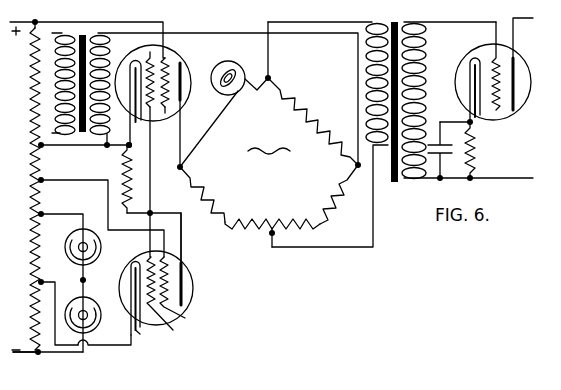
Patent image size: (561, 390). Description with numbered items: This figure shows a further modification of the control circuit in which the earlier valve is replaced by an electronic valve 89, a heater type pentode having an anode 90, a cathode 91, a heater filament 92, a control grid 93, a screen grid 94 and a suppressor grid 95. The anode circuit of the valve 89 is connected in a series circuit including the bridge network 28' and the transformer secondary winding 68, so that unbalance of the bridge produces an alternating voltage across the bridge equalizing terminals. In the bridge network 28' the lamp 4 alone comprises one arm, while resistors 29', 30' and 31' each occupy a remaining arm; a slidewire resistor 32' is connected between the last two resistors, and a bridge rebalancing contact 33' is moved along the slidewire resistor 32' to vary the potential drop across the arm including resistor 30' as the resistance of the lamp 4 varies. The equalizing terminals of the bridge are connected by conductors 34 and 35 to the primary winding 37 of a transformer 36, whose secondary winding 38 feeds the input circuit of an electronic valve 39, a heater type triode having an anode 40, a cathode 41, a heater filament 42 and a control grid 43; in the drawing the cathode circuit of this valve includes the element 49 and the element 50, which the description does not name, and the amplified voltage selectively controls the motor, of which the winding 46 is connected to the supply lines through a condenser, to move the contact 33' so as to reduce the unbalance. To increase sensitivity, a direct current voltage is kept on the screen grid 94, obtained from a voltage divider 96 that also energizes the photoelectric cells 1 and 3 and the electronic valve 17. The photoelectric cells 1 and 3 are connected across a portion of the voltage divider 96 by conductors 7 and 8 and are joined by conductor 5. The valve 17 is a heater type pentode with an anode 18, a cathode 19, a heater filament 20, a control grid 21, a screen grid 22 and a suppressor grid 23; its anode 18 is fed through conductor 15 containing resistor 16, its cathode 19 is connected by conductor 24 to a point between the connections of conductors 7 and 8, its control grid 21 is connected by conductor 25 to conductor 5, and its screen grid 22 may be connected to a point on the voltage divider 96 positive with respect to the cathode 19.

The motor winding 46 is at (22, 186).
The transformer secondary winding 68 is at (151, 53).
The heater filament 92 is at (169, 62).
The anode 90 is at (182, 76).
The electronic valve 89 is at (182, 100).
The suppressor grid 95 is at (182, 113).
The screen grid 94 is at (150, 110).
The control grid 93 is at (152, 124).
The cathode 91 is at (125, 105).
The voltage divider 96 is at (42, 163).
The resistor 16 is at (124, 180).
The conductor 8 is at (70, 212).
The photoelectric cell 3 is at (84, 230).
The conductor 25 is at (136, 230).
The resistor 31' is at (194, 194).
The conductor 15 is at (183, 237).
The anode 18 is at (184, 268).
The electronic valve 17 is at (184, 292).
The suppressor grid 23 is at (185, 318).
The screen grid 22 is at (173, 330).
The control grid 21 is at (140, 334).
The heater filament 20 is at (141, 327).
The cathode 19 is at (131, 290).
The conductor 5 is at (75, 272).
The photoelectric cell 1 is at (99, 322).
The conductor 7 is at (68, 353).
The conductor 24 is at (124, 346).
The lamp 4 is at (233, 62).
The conductor 34 is at (303, 22).
The primary winding 37 is at (368, 28).
The resistor 29' is at (313, 121).
The bridge network 28' is at (269, 139).
The resistor 30' is at (344, 195).
The slidewire resistor 32' is at (271, 238).
The bridge rebalancing contact 33' is at (256, 252).
The conductor 35 is at (342, 248).
The transformer 36 is at (393, 183).
The secondary winding 38 is at (424, 56).
The heater filament 42 is at (495, 58).
The cathode 41 is at (469, 64).
The electronic valve 39 is at (469, 108).
The capacitor 50 is at (451, 108).
The anode 40 is at (513, 111).
The control grid 43 is at (497, 112).
The cathode resistor 49 is at (474, 152).